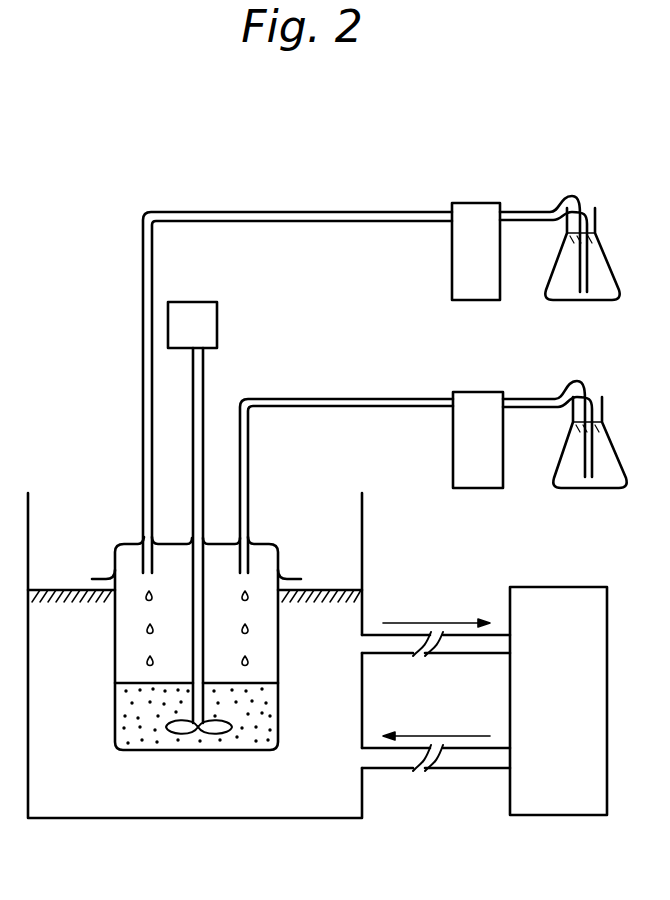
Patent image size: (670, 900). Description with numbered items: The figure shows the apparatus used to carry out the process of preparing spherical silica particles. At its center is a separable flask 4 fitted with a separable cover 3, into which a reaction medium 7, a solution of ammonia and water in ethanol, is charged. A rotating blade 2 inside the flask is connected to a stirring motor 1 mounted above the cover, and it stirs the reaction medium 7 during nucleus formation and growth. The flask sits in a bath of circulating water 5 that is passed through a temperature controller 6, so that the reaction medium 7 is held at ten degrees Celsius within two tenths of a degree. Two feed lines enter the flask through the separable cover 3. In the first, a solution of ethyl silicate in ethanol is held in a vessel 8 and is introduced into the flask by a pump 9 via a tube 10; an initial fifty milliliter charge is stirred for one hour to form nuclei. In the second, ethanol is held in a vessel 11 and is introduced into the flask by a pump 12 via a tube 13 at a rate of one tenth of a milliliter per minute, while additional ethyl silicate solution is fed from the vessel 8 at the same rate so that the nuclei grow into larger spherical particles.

The stirring motor 1 is at (192, 325).
The rotating blade 2 is at (203, 392).
The separable cover 3 is at (265, 540).
The separable flask 4 is at (207, 618).
The water 5 is at (195, 655).
The temperature controller 6 is at (484, 701).
The reaction medium 7 is at (225, 708).
The vessel 8 is at (589, 442).
The pump 9 is at (478, 440).
The tube 10 is at (531, 410).
The vessel 11 is at (582, 254).
The pump 12 is at (476, 251).
The tube 13 is at (525, 215).